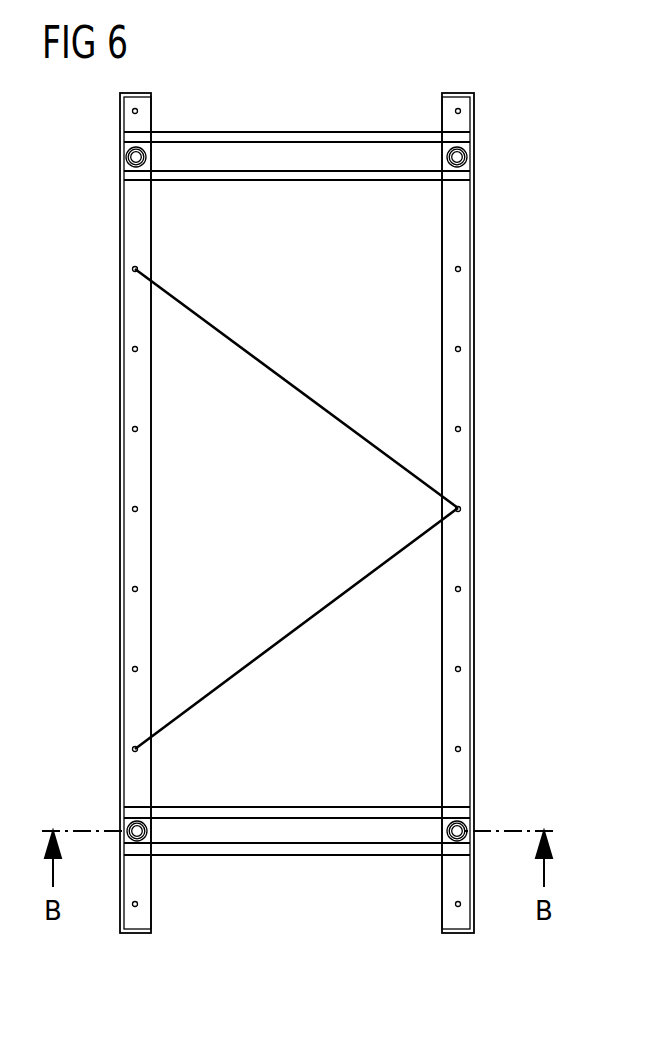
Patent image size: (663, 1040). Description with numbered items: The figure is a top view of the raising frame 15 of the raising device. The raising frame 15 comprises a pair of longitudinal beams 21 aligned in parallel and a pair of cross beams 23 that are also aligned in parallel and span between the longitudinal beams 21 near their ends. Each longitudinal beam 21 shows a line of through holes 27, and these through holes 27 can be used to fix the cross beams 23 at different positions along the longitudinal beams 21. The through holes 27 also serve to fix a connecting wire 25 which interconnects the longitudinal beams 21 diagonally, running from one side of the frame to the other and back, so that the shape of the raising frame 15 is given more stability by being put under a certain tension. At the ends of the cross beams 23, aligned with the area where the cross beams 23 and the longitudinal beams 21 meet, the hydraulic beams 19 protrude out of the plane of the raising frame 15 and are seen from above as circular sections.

The raising frame 15 is at (522, 256).
The hydraulic beam 19 is at (134, 157).
The longitudinal beam 21 is at (130, 474).
The cross beam 23 is at (281, 172).
The connecting wire 25 is at (382, 453).
The through hole 27 is at (132, 269).